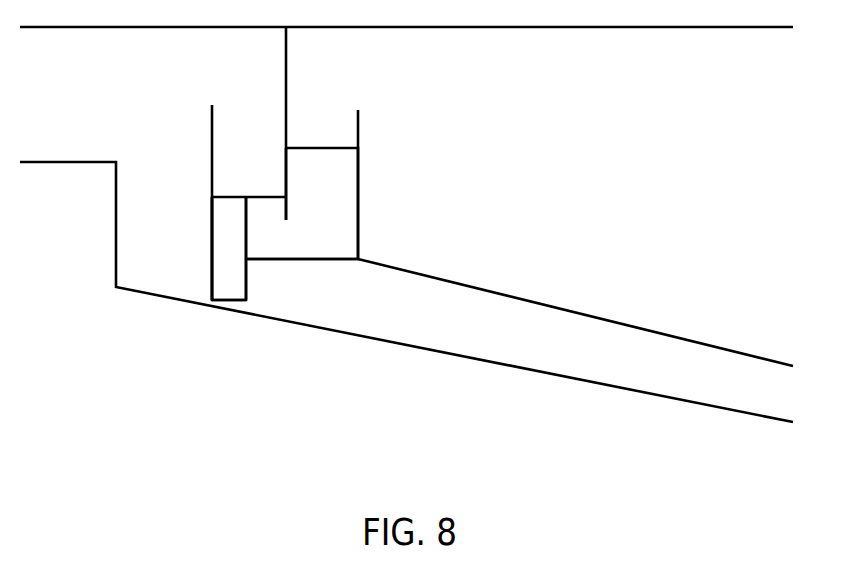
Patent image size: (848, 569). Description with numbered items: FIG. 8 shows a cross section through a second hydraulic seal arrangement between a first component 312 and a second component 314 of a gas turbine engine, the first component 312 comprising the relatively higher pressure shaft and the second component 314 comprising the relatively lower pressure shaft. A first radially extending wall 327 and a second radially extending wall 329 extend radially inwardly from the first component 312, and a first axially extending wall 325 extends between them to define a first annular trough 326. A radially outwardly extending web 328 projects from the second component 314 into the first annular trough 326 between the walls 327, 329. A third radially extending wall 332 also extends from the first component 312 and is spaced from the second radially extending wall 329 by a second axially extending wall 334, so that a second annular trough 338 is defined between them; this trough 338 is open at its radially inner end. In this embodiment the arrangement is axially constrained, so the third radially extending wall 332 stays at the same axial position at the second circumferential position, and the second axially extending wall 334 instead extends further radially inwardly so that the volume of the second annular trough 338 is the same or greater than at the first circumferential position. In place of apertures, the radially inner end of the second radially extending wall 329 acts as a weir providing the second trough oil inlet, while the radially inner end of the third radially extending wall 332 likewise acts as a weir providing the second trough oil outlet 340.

The first component 312 is at (620, 322).
The second component 314 is at (607, 28).
The first axially extending wall 325 is at (318, 260).
The first annular trough 326 is at (333, 218).
The first radially extending wall 327 is at (360, 165).
The radially outwardly extending web 328 is at (292, 188).
The second radially extending wall 329 is at (246, 196).
The third radially extending wall 332 is at (211, 239).
The second axially extending wall 334 is at (230, 302).
The second annular trough 338 is at (223, 225).
The second trough oil outlet 340 is at (211, 190).